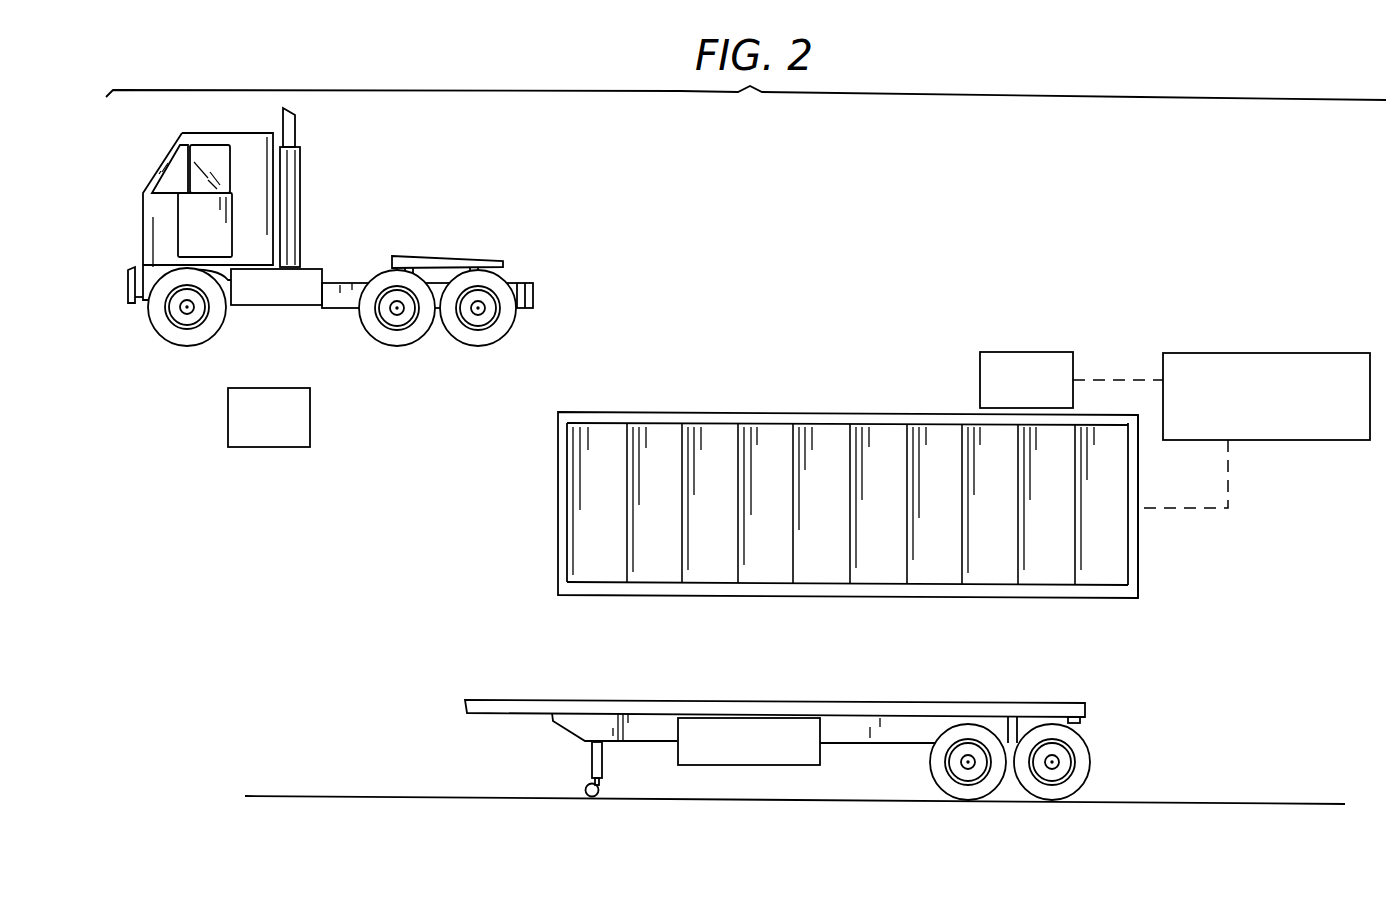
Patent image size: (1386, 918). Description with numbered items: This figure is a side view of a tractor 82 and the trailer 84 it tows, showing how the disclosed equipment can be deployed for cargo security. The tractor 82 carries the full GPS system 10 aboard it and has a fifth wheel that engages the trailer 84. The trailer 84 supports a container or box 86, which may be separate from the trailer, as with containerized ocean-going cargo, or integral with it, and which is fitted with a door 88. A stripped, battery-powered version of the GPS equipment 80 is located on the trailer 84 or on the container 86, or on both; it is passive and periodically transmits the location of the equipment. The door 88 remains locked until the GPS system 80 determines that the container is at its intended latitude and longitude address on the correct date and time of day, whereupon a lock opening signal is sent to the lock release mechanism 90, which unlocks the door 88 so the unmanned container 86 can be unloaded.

The GPS system 10 is at (310, 420).
The stripped GPS system 80 is at (1023, 350).
The tractor 82 is at (348, 273).
The trailer 84 is at (492, 700).
The container or box 86 is at (558, 508).
The door 88 is at (1138, 553).
The lock release mechanism 90 is at (1227, 352).